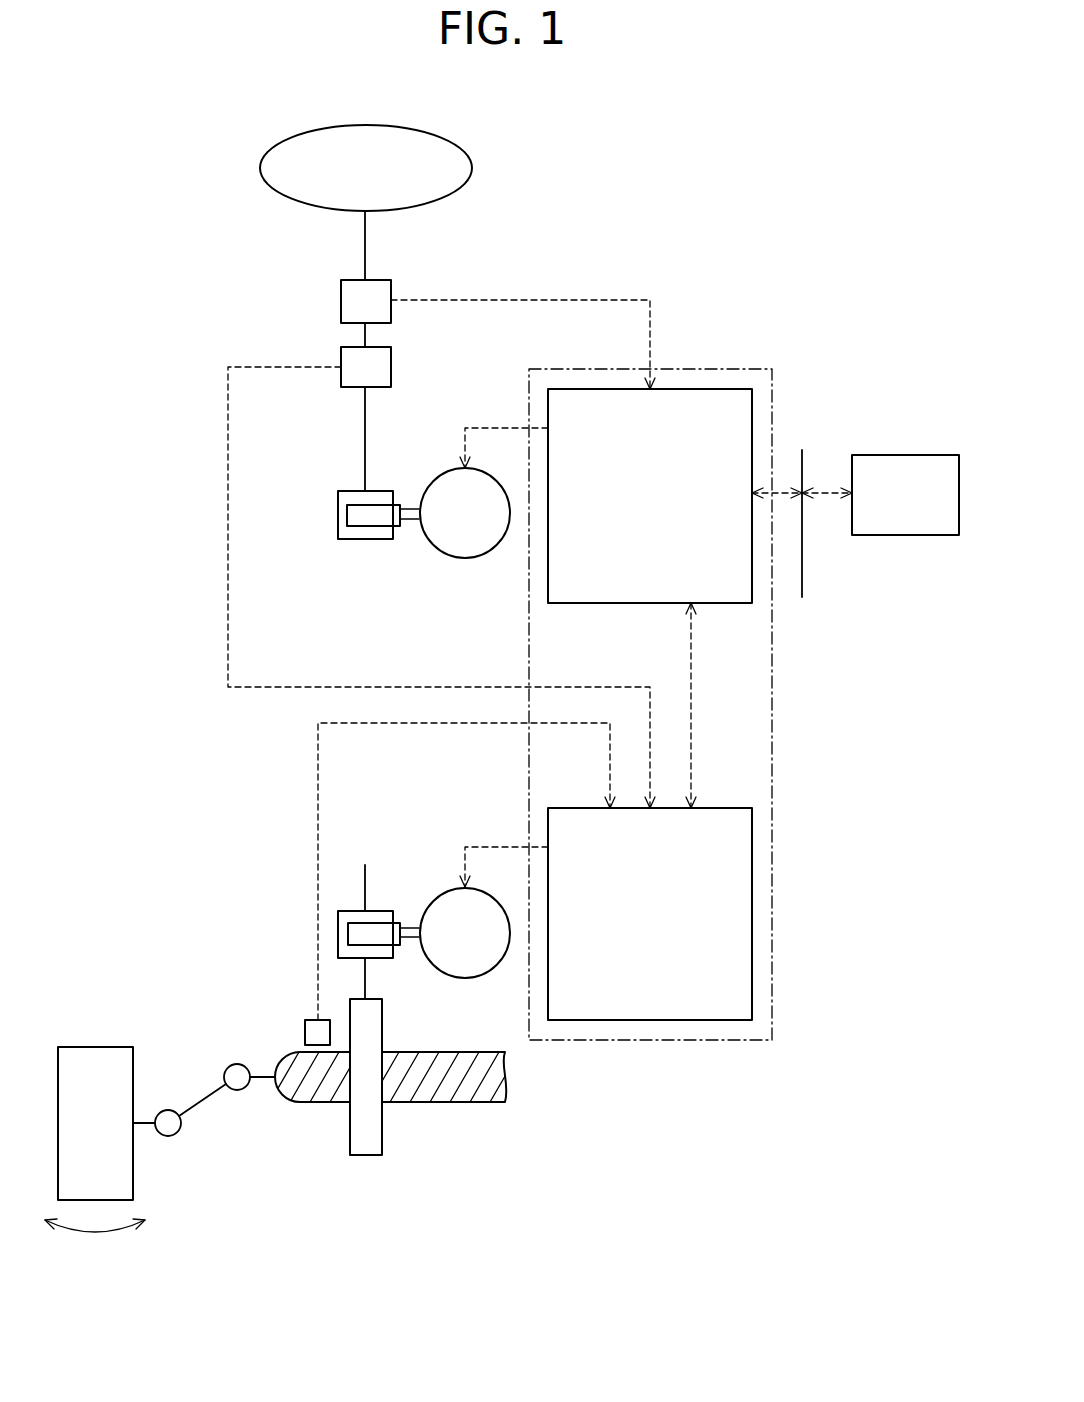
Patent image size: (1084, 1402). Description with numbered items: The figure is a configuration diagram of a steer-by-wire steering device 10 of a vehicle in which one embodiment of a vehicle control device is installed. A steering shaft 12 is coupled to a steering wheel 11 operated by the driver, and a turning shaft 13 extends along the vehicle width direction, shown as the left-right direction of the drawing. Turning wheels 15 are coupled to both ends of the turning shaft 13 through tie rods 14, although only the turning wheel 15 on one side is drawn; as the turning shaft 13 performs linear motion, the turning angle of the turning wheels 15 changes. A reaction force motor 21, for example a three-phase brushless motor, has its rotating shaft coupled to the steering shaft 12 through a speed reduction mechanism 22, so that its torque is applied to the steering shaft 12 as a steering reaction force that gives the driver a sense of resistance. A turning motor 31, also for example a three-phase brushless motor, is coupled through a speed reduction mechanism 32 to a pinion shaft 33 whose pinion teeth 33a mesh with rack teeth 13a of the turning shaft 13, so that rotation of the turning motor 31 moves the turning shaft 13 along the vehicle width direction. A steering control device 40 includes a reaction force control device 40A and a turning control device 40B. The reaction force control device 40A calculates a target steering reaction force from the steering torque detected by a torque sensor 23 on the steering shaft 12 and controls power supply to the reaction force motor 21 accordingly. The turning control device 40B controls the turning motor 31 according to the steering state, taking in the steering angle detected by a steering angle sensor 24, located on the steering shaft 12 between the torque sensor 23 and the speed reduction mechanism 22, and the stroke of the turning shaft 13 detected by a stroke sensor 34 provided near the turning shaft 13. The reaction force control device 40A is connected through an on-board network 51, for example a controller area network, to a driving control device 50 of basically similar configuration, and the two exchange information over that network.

The steering device 10 is at (207, 316).
The steering wheel 11 is at (260, 168).
The steering shaft 12 is at (365, 246).
The turning shaft 13 is at (462, 1104).
The rack teeth 13a is at (424, 1086).
The tie rod 14 is at (196, 1100).
The turning wheel 15 is at (95, 1047).
The reaction force motor 21 is at (434, 481).
The speed reduction mechanism 22 is at (333, 545).
The torque sensor 23 is at (341, 300).
The steering angle sensor 24 is at (354, 388).
The turning motor 31 is at (434, 899).
The speed reduction mechanism 32 is at (385, 890).
The pinion shaft 33 is at (367, 978).
The pinion teeth 33a is at (376, 1022).
The stroke sensor 34 is at (308, 1020).
The steering control device 40 is at (753, 369).
The reaction force control device 40A is at (712, 389).
The turning control device 40B is at (730, 808).
The driving control device 50 is at (895, 455).
The on-board network 51 is at (806, 462).